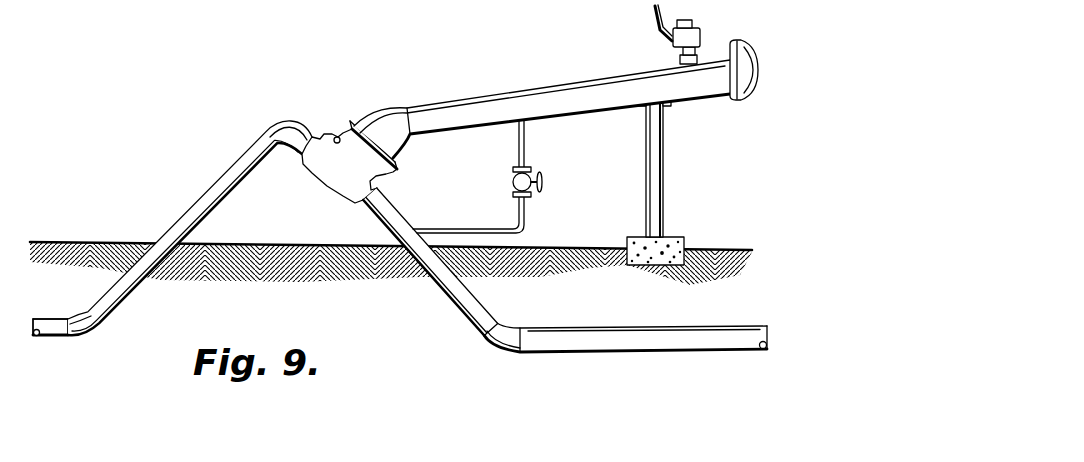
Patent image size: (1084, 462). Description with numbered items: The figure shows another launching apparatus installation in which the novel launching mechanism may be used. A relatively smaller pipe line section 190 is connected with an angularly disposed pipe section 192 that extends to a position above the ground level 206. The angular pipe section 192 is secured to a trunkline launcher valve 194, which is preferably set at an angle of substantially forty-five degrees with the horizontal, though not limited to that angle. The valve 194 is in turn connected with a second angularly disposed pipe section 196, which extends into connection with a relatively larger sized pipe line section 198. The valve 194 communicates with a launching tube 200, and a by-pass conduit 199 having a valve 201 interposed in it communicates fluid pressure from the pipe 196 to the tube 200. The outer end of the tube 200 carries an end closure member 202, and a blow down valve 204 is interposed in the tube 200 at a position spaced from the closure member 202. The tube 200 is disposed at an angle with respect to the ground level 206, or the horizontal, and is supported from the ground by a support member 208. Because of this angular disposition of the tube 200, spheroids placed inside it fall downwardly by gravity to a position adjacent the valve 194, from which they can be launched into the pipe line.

The pipe line section 190 is at (60, 328).
The angularly disposed pipe section 192 is at (213, 189).
The trunkline launcher valve 194 is at (340, 181).
The second angularly disposed pipe section 196 is at (389, 215).
The pipe line section 198 is at (559, 337).
The by-pass conduit 199 is at (524, 147).
The launching tube 200 is at (457, 107).
The valve 201 is at (512, 180).
The end closure member 202 is at (747, 99).
The blow down valve 204 is at (699, 34).
The ground level 206 is at (533, 248).
The support member 208 is at (659, 206).